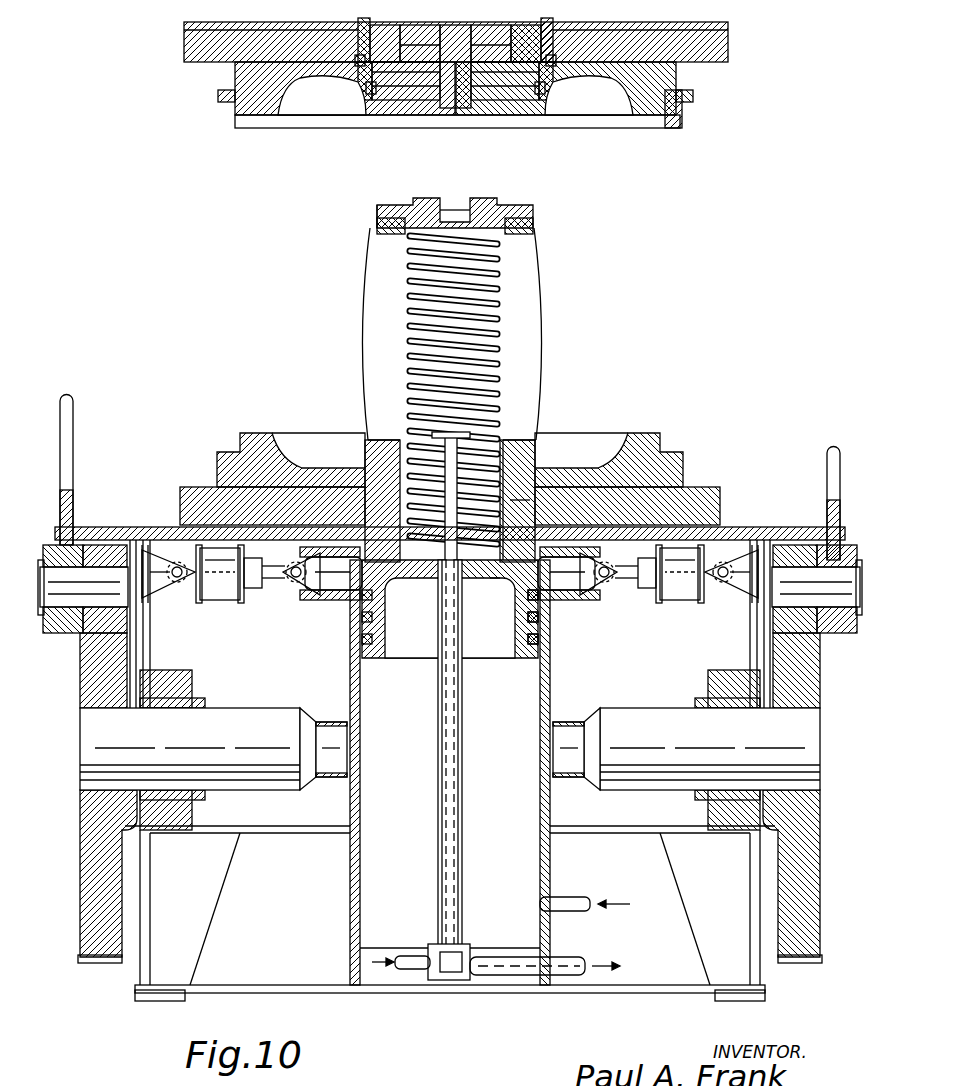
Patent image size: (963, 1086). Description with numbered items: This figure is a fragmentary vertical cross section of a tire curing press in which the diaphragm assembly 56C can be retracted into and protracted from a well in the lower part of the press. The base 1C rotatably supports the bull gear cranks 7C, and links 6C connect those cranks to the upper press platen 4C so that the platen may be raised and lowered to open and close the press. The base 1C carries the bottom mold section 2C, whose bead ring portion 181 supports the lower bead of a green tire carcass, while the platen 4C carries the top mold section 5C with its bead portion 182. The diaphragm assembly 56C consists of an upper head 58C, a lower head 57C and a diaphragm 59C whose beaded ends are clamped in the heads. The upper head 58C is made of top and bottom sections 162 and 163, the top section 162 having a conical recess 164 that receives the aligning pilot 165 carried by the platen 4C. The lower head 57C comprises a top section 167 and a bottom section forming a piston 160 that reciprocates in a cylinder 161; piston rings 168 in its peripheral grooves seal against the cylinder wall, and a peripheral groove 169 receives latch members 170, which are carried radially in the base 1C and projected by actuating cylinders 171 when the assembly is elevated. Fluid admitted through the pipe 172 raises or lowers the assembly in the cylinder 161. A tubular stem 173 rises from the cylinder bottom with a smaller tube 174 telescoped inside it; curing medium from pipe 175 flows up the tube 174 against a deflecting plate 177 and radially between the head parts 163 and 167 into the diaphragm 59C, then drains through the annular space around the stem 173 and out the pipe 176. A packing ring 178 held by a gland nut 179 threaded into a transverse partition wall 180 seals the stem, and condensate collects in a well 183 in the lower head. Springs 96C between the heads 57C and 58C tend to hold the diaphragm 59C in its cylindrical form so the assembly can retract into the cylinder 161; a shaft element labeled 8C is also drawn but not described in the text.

The base 1C is at (736, 527).
The bottom mold section 2C is at (648, 433).
The upper press platen 4C is at (730, 44).
The top mold section 5C is at (683, 118).
The links 6C is at (68, 472).
The bull gear cranks 7C is at (92, 866).
The shaft 8C is at (226, 716).
The diaphragm assembly 56C is at (540, 296).
The lower head 57C is at (522, 470).
The upper head 58C is at (516, 212).
The diaphragm 59C is at (541, 353).
The springs 96C is at (496, 394).
The piston 160 is at (500, 586).
The cylinder 161 is at (538, 812).
The top section 162 is at (393, 206).
The bottom section 163 is at (395, 230).
The conical recess 164 is at (456, 210).
The aligning pilot 165 is at (462, 100).
The top section 167 is at (512, 440).
The piston rings 168 is at (526, 640).
The peripheral groove 169 is at (350, 586).
The latch members 170 is at (316, 598).
The actuating cylinders 171 is at (222, 592).
The pipe 172 is at (568, 904).
The tubular stem 173 is at (459, 792).
The tube 174 is at (456, 757).
The pipe 175 is at (408, 950).
The pipe 176 is at (562, 957).
The deflecting plate 177 is at (440, 434).
The packing ring 178 is at (445, 612).
The gland nut 179 is at (438, 596).
The transverse partition wall 180 is at (492, 578).
The bead ring portion 181 is at (378, 454).
The bead portion 182 is at (548, 100).
The well 183 is at (528, 487).